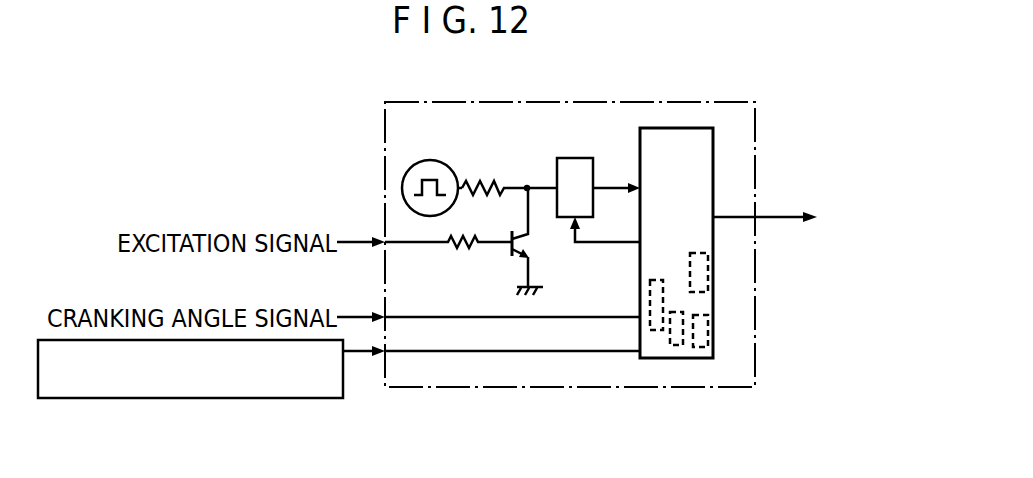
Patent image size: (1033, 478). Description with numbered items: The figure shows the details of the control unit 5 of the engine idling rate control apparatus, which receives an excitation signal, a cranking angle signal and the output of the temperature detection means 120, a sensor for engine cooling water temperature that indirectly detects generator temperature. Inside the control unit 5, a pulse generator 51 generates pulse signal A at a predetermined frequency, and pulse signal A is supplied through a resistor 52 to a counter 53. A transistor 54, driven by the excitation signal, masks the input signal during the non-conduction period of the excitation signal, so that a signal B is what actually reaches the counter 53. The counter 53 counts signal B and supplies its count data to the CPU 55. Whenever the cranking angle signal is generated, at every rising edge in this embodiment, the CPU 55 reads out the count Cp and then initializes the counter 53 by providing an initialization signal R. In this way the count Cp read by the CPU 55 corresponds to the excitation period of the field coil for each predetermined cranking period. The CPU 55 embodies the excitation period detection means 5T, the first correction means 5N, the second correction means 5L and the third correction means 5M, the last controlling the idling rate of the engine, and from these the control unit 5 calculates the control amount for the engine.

The control unit 5 is at (755, 185).
The pulse generator 51 is at (426, 160).
The resistor 52 is at (492, 174).
The counter 53 is at (575, 158).
The transistor 54 is at (480, 241).
The CPU 55 is at (713, 130).
The first correction means 5N is at (708, 272).
The third correction means 5M is at (708, 322).
The excitation period detection means 5T is at (652, 360).
The second correction means 5L is at (682, 362).
The temperature detection means 120 is at (287, 398).
The pulse signal A is at (461, 184).
The signal B is at (514, 181).
The count Cp is at (609, 182).
The initialization signal R is at (616, 243).